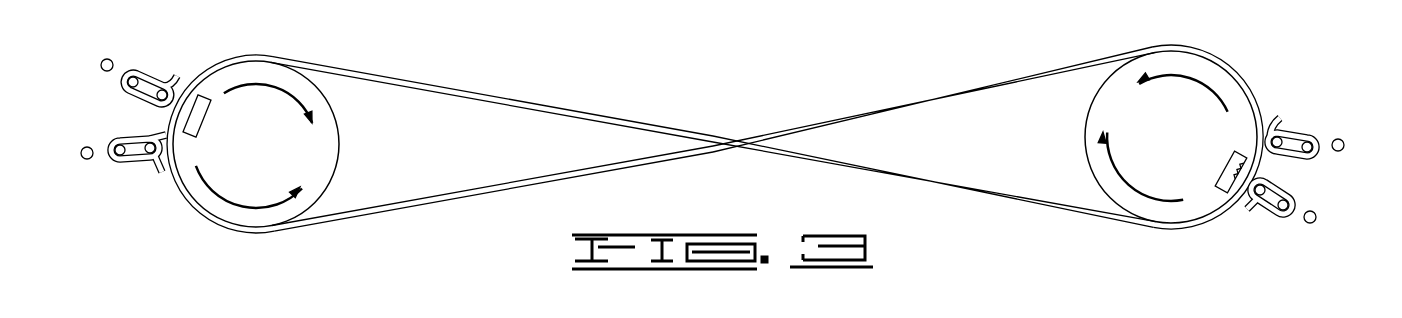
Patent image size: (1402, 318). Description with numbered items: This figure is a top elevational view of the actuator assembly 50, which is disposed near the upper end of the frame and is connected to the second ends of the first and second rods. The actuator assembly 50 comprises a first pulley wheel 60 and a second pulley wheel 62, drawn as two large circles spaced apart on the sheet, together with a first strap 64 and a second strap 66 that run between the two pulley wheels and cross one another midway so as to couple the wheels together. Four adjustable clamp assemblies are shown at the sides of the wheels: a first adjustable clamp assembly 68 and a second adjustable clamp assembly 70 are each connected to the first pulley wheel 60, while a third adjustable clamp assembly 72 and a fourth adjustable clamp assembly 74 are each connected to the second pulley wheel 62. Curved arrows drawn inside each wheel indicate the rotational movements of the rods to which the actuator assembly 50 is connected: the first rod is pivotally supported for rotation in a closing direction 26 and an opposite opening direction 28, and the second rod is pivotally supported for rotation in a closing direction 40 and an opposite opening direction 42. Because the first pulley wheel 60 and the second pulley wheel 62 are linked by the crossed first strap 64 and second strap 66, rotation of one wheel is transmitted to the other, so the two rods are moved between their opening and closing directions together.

The closing direction 26 is at (1121, 178).
The opening direction 28 is at (1216, 96).
The closing direction 40 is at (222, 196).
The opening direction 42 is at (296, 102).
The actuator assembly 50 is at (263, 239).
The first pulley wheel 60 is at (1165, 212).
The second pulley wheel 62 is at (227, 215).
The first strap 64 is at (882, 110).
The second strap 66 is at (920, 186).
The first adjustable clamp assembly 68 is at (1292, 130).
The second adjustable clamp assembly 70 is at (1267, 214).
The third adjustable clamp assembly 72 is at (144, 60).
The fourth adjustable clamp assembly 74 is at (132, 166).